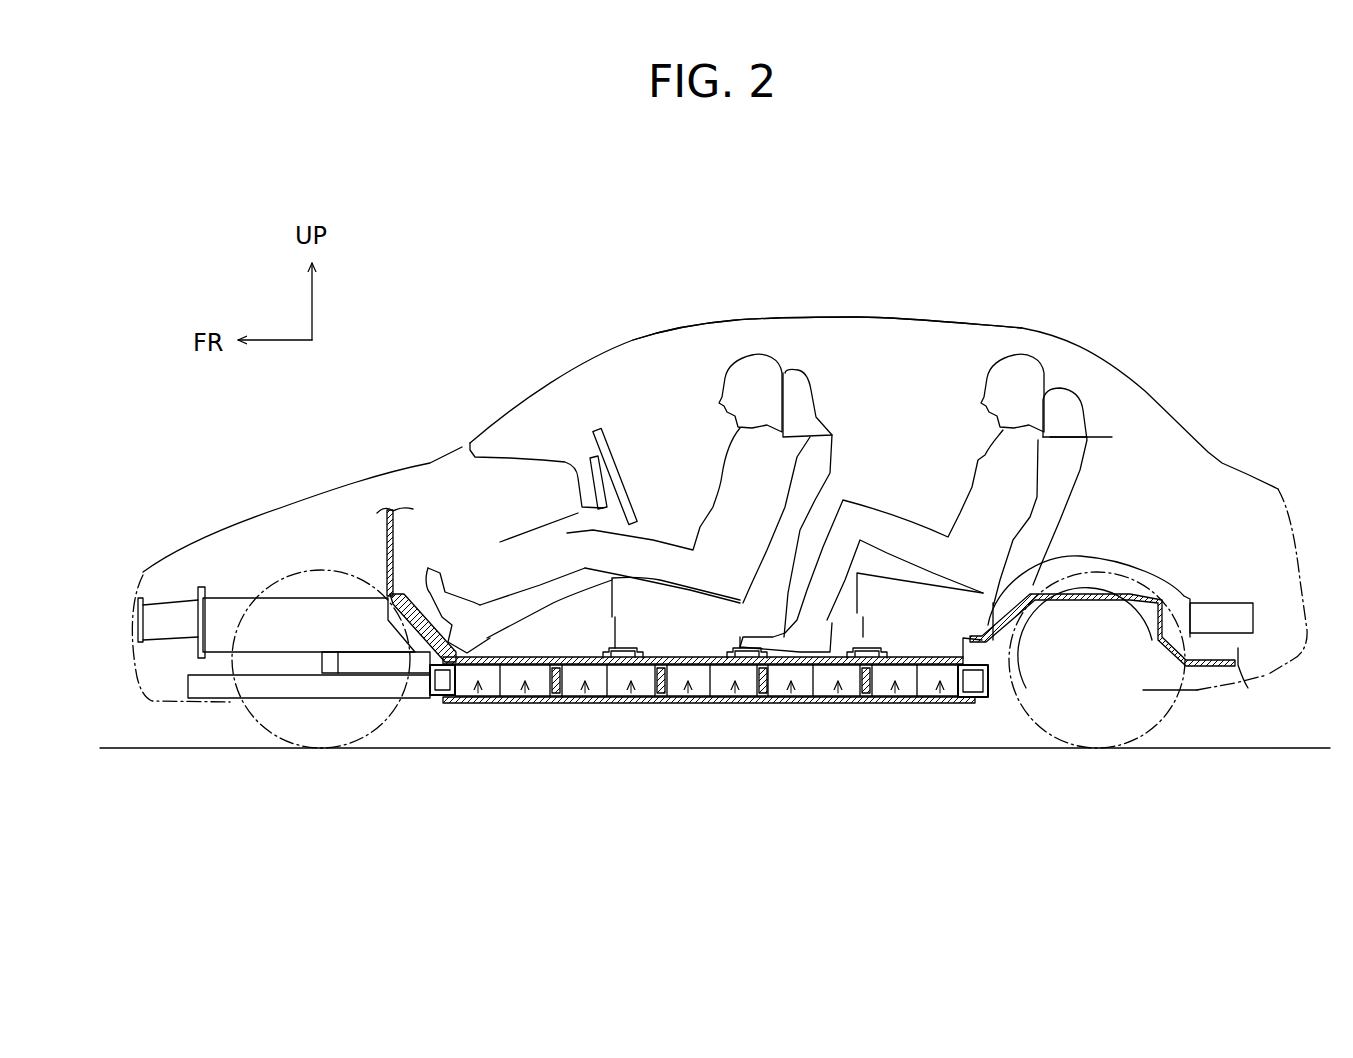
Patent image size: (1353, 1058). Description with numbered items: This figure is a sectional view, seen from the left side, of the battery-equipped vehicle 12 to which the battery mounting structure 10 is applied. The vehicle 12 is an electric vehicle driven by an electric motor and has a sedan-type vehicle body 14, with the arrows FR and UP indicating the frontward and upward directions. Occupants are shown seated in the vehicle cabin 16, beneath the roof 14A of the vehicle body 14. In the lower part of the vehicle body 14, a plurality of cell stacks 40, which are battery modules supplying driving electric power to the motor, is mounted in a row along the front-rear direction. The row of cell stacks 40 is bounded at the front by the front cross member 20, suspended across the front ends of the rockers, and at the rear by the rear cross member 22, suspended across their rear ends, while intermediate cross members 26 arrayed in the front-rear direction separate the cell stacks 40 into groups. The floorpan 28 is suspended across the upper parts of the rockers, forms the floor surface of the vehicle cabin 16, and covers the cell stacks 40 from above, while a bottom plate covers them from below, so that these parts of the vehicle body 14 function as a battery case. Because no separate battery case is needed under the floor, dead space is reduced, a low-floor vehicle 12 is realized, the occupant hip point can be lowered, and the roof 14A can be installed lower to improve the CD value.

The battery mounting structure 10 is at (453, 733).
The battery-equipped vehicle 12 is at (690, 280).
The vehicle body 14 is at (420, 455).
The roof 14A is at (857, 316).
The vehicle cabin 16 is at (907, 425).
The front cross member 20 is at (430, 688).
The rear cross member 22 is at (990, 686).
The intermediate cross members 26 is at (560, 683).
The floorpan 28 is at (667, 654).
The cell stacks 40 is at (525, 703).